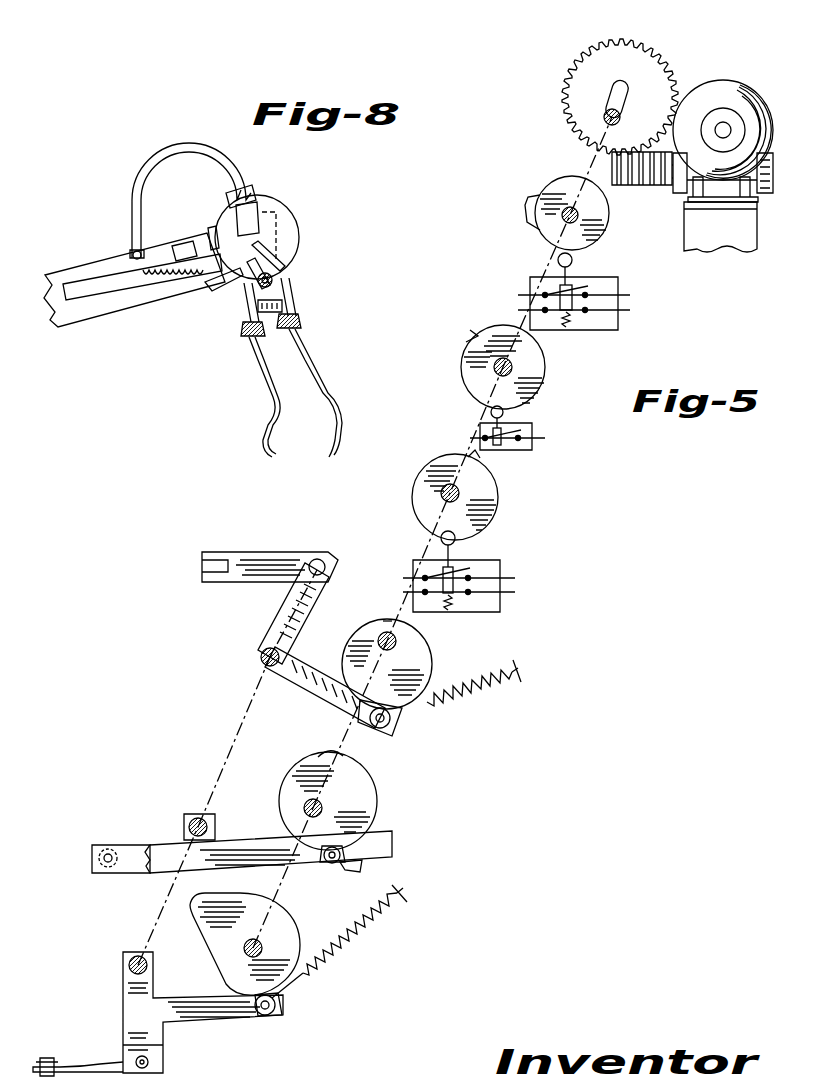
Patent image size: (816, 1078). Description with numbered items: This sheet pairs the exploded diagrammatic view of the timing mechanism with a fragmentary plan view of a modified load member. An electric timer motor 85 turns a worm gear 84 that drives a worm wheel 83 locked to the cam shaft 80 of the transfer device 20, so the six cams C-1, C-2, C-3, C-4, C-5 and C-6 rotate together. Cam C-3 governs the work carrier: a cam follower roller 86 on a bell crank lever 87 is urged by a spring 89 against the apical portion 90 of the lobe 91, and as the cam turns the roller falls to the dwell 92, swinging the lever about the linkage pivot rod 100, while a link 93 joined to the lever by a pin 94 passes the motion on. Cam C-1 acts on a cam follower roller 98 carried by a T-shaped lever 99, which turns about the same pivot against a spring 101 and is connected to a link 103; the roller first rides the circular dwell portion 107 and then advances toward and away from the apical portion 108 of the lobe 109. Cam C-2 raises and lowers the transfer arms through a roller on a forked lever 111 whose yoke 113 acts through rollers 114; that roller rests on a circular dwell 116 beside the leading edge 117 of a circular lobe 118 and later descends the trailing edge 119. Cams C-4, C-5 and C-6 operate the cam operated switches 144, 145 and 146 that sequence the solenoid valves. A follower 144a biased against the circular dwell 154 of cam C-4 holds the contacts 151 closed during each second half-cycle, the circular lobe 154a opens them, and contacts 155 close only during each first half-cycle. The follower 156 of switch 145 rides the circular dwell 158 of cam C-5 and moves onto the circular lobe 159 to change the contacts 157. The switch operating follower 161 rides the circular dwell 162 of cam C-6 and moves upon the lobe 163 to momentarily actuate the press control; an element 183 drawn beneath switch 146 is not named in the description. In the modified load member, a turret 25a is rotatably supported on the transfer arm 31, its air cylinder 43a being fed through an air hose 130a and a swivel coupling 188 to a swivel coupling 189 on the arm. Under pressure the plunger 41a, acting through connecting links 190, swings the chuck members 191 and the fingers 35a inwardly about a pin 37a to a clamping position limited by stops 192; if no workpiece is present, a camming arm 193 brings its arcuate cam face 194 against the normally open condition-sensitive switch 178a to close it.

In FIG. 8, the transfer arm 31 is at (97, 326).
In FIG. 8, the condition-sensitive switch 178a is at (183, 240).
In FIG. 8, the swivel coupling 189 is at (130, 252).
In FIG. 8, the air hose 130a is at (158, 152).
In FIG. 8, the swivel coupling 188 is at (258, 186).
In FIG. 8, the air cylinder 43a is at (259, 210).
In FIG. 8, the modified work load member 25a is at (290, 228).
In FIG. 8, the arcuate cam face 194 is at (210, 230).
In FIG. 8, the plunger 41a is at (283, 245).
In FIG. 8, the connecting links 190 is at (283, 262).
In FIG. 8, the pin 37a is at (276, 282).
In FIG. 8, the camming arm 193 is at (220, 286).
In FIG. 8, the stops 192 is at (257, 308).
In FIG. 8, the chuck members 191 is at (300, 320).
In FIG. 8, the fingers 35a is at (328, 395).
In FIG. 5, the worm wheel 83 is at (645, 50).
In FIG. 5, the cam shaft 80 is at (606, 100).
In FIG. 5, the electric timer motor 85 is at (700, 86).
In FIG. 5, the worm gear 84 is at (640, 196).
In FIG. 5, the transfer device 20 is at (730, 248).
In FIG. 5, the cam C-6 is at (605, 228).
In FIG. 5, the lobe 163 is at (527, 215).
In FIG. 5, the switch operating follower 161 is at (557, 261).
In FIG. 5, the cam operated switch 146 is at (620, 283).
In FIG. 5, the circular dwell 162 is at (590, 250).
In FIG. 5, the spring 183 is at (582, 322).
In FIG. 5, the cam C-5 is at (548, 375).
In FIG. 5, the circular dwell 158 is at (538, 348).
In FIG. 5, the circular lobe 159 is at (470, 372).
In FIG. 5, the follower 156 is at (490, 414).
In FIG. 5, the cam operated switch 145 is at (535, 428).
In FIG. 5, the contacts 157 is at (503, 428).
In FIG. 5, the cam C-4 is at (498, 486).
In FIG. 5, the circular dwell 154 is at (422, 476).
In FIG. 5, the circular lobe 154a is at (500, 508).
In FIG. 5, the follower 144a is at (441, 538).
In FIG. 5, the cam operated switch 144 is at (505, 562).
In FIG. 5, the contacts 155 is at (462, 566).
In FIG. 5, the contacts 151 is at (462, 612).
In FIG. 5, the link 93 is at (268, 556).
In FIG. 5, the pin 94 is at (320, 559).
In FIG. 5, the bell crank lever 87 is at (288, 695).
In FIG. 5, the apical portion 90 is at (352, 712).
In FIG. 5, the cam follower roller 86 is at (394, 724).
In FIG. 5, the cam C-3 is at (432, 652).
In FIG. 5, the dwell 92 is at (388, 620).
In FIG. 5, the lobe 91 is at (350, 660).
In FIG. 5, the spring 89 is at (470, 694).
In FIG. 5, the cam C-2 is at (366, 776).
In FIG. 5, the trailing edge 119 is at (322, 757).
In FIG. 5, the circular dwell 116 is at (294, 782).
In FIG. 5, the circular lobe 118 is at (378, 803).
In FIG. 5, the forked lever 111 is at (252, 838).
In FIG. 5, the yoke 113 is at (138, 845).
In FIG. 5, the rollers 114 is at (98, 864).
In FIG. 5, the linkage pivot rod 100 is at (198, 814).
In FIG. 5, the lobe 109 is at (333, 866).
In FIG. 5, the leading edge 117 is at (346, 868).
In FIG. 5, the apical portion 108 is at (190, 898).
In FIG. 5, the cam C-1 is at (292, 905).
In FIG. 5, the circular dwell portion 107 is at (300, 955).
In FIG. 5, the spring 101 is at (370, 938).
In FIG. 5, the T-shaped lever 99 is at (170, 1016).
In FIG. 5, the cam follower roller 98 is at (255, 1020).
In FIG. 5, the link 103 is at (70, 1063).